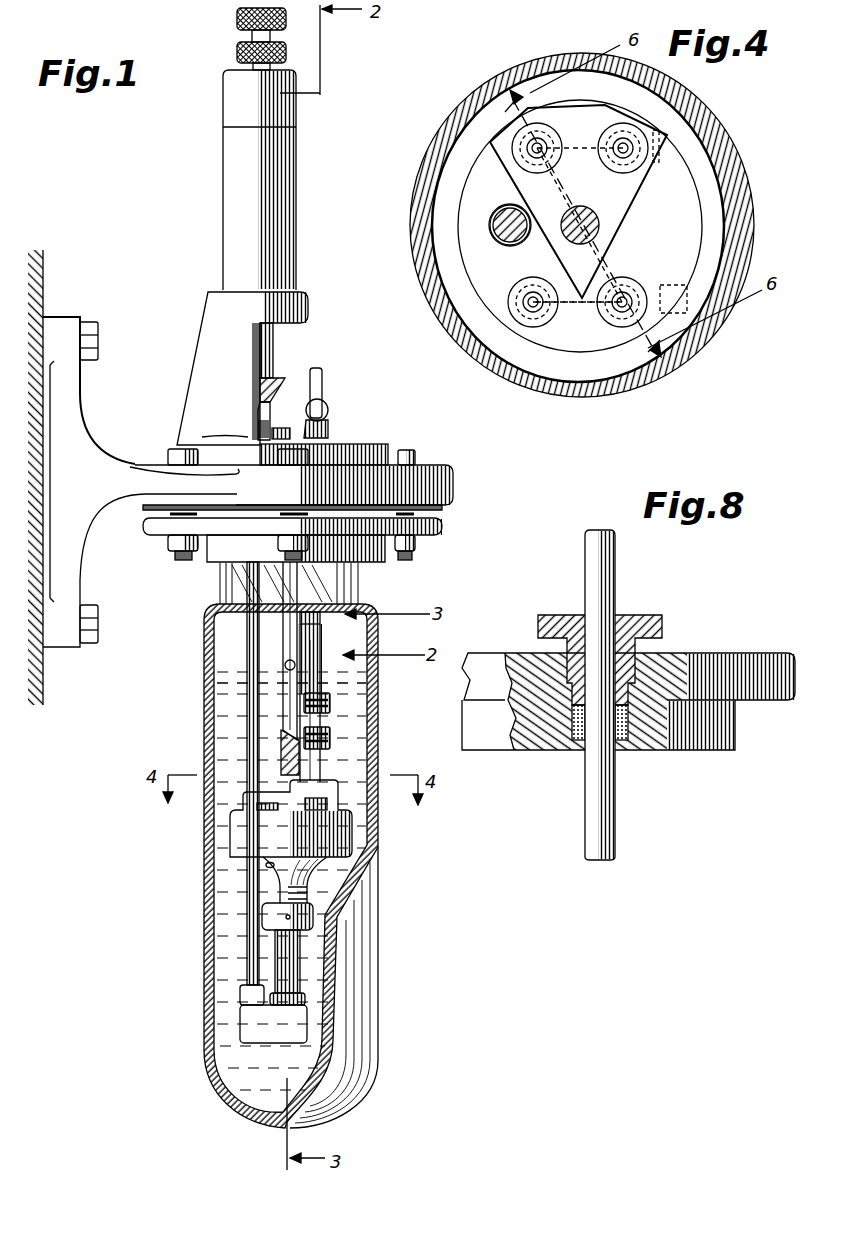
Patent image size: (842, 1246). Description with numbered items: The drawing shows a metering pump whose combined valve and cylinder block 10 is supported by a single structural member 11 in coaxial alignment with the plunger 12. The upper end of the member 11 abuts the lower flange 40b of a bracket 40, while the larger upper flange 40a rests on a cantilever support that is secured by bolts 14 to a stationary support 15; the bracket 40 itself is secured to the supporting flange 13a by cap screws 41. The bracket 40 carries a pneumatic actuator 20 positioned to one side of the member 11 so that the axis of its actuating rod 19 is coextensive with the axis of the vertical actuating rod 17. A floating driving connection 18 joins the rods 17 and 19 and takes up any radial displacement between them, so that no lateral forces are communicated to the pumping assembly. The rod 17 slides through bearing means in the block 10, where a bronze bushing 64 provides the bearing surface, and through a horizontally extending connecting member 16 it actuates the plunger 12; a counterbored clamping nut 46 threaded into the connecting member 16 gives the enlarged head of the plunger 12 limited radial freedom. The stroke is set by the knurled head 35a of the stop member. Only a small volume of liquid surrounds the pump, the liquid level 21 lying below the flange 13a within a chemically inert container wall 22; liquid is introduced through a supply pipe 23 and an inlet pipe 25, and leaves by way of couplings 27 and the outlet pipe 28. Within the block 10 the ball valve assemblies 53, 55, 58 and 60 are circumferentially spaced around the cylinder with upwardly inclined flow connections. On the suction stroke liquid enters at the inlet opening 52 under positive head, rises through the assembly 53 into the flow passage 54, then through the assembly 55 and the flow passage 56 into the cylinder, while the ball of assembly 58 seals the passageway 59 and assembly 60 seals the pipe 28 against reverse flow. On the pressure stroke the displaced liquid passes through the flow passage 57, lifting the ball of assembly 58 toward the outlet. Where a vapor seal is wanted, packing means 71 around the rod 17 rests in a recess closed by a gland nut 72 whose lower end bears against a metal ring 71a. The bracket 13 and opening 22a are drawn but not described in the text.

In FIG. 1, the combined valve and cylinder block 10 is at (352, 840).
In FIG. 1, the structural member 11 is at (282, 703).
In FIG. 1, the plunger 12 is at (298, 968).
In FIG. 1, the bracket 13 is at (82, 540).
In FIG. 1, the supporting flange 13a is at (454, 490).
In FIG. 1, the bolts 14 is at (100, 333).
In FIG. 1, the stationary support 15 is at (46, 297).
In FIG. 1, the connecting member 16 is at (242, 1023).
In FIG. 1, the actuating rod 17 is at (247, 633).
In FIG. 4, the actuating rod 17 is at (503, 214).
In FIG. 8, the actuating rod 17 is at (610, 803).
In FIG. 1, the floating driving connection 18 is at (280, 392).
In FIG. 1, the actuating rod 19 is at (275, 355).
In FIG. 1, the pneumatic actuator 20 is at (226, 143).
In FIG. 1, the liquid level 21 is at (366, 683).
In FIG. 1, the container wall 22 is at (208, 815).
In FIG. 4, the container wall 22 is at (690, 352).
In FIG. 1, the tube opening 22a is at (284, 665).
In FIG. 1, the supply pipe 23 is at (324, 388).
In FIG. 1, the inlet pipe 25 is at (318, 616).
In FIG. 1, the couplings 27 is at (330, 718).
In FIG. 1, the pipe 28 is at (318, 647).
In FIG. 1, the knurled head 35a is at (235, 20).
In FIG. 1, the bracket 40 is at (218, 318).
In FIG. 8, the upper flange 40a is at (740, 652).
In FIG. 8, the lower flange 40b is at (727, 752).
In FIG. 1, the cap screws 41 is at (257, 433).
In FIG. 1, the clamping nut 46 is at (305, 999).
In FIG. 1, the inlet opening 52 is at (266, 866).
In FIG. 4, the ball valve assembly 53 is at (526, 318).
In FIG. 4, the flow passage 54 is at (571, 305).
In FIG. 4, the ball valve assembly 55 is at (616, 322).
In FIG. 4, the flow passage 56 is at (603, 262).
In FIG. 4, the flow passage 57 is at (570, 186).
In FIG. 4, the ball valve assembly 58 is at (517, 138).
In FIG. 4, the passageway 59 is at (571, 170).
In FIG. 4, the ball valve assembly 60 is at (648, 135).
In FIG. 4, the bronze bushing 64 is at (494, 228).
In FIG. 8, the packing means 71 is at (578, 742).
In FIG. 8, the metal ring 71a is at (630, 740).
In FIG. 8, the gland nut 72 is at (652, 613).